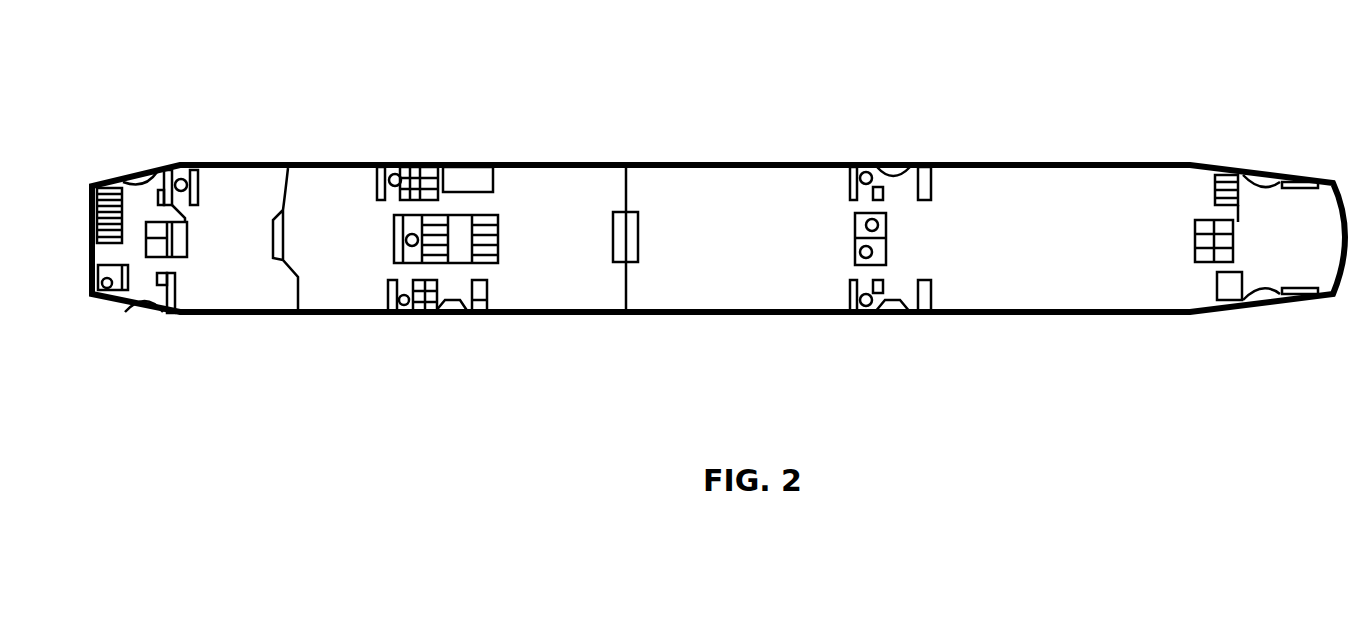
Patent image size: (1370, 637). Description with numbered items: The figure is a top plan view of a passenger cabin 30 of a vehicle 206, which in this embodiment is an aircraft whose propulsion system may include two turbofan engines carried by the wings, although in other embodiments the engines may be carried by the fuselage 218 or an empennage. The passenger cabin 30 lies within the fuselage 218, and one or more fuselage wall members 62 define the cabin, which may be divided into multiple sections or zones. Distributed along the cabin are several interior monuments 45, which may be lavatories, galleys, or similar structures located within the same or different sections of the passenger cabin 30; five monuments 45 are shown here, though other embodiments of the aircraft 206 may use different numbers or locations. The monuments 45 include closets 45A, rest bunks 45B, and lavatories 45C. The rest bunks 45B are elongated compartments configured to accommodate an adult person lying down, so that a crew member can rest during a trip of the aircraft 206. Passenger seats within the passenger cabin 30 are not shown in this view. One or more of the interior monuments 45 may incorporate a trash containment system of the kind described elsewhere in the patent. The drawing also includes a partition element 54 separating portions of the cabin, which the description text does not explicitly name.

The vehicle 206 is at (1250, 78).
The fuselage 218 is at (583, 110).
The fuselage wall member 62 is at (535, 164).
The passenger cabin 30 is at (296, 184).
The interior monument 45 is at (465, 164).
The closet 45A is at (925, 164).
The rest bunk 45B is at (450, 243).
The lavatory 45C is at (385, 164).
The partition 54 is at (638, 298).